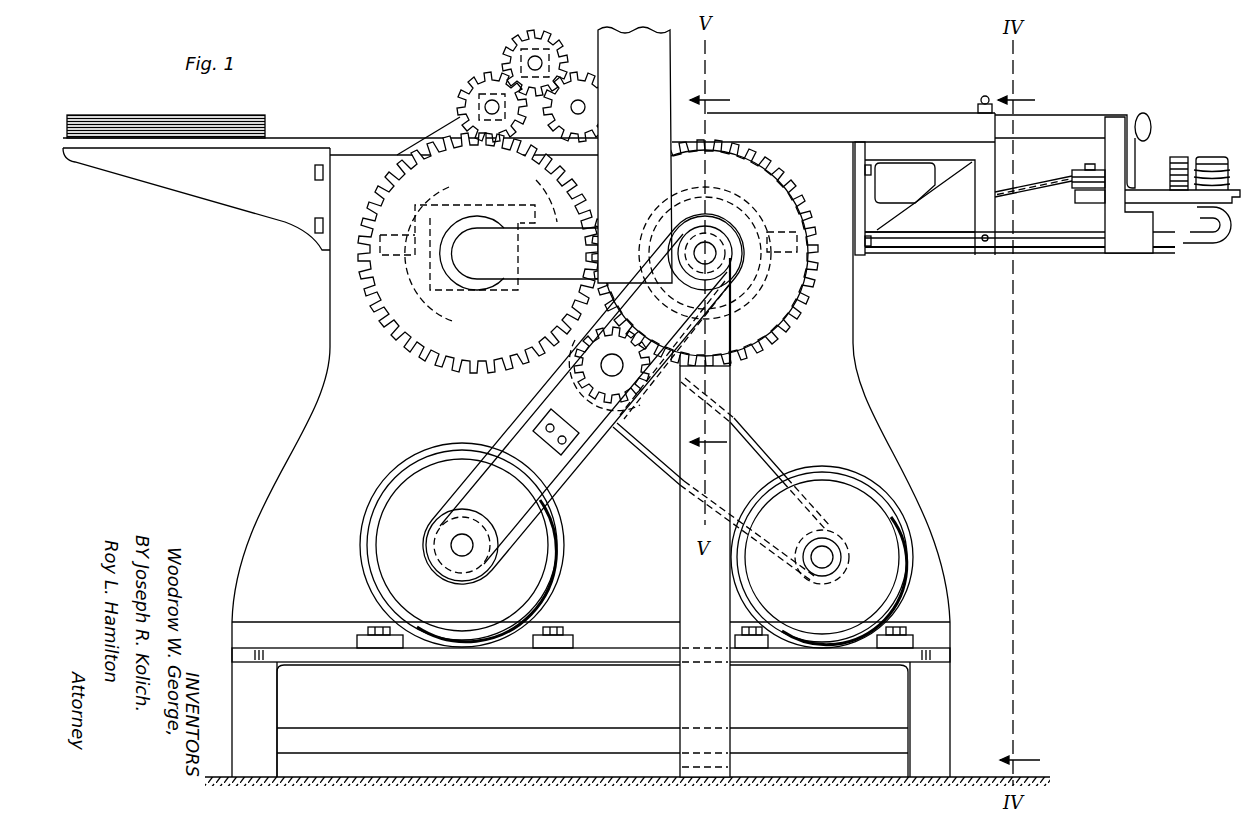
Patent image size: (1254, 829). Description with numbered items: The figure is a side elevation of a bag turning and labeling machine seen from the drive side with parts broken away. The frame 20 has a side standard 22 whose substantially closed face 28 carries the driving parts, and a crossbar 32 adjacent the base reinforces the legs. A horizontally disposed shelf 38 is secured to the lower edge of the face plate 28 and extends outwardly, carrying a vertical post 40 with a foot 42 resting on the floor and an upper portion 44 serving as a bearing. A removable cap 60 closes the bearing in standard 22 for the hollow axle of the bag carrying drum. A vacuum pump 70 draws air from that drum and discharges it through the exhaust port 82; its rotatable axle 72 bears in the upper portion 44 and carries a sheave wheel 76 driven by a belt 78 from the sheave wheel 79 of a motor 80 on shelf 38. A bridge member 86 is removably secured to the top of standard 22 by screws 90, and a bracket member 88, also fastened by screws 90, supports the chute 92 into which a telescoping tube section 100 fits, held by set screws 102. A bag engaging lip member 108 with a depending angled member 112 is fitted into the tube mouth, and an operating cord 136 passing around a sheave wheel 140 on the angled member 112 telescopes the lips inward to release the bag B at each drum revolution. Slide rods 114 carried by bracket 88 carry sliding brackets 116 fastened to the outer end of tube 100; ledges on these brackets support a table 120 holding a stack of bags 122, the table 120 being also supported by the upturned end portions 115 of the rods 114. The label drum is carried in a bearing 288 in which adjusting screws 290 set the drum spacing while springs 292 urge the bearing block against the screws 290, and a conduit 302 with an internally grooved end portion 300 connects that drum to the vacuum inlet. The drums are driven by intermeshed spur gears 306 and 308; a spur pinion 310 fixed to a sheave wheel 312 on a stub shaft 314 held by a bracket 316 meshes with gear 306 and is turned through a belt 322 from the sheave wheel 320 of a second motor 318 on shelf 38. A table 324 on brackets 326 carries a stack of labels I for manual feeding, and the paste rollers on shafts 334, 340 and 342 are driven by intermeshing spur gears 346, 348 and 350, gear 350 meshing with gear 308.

The stack of labels I is at (213, 115).
The table 324 is at (290, 140).
The bridge member 86 is at (364, 177).
The brackets 326 is at (287, 170).
The spur gear 348 is at (518, 31).
The shaft 340 is at (541, 58).
The spur gear 350 is at (467, 88).
The shaft 342 is at (485, 108).
The spur gear 346 is at (590, 79).
The shaft 334 is at (586, 107).
The exhaust port 82 is at (658, 71).
The springs 292 is at (436, 208).
The adjusting screws 290 is at (556, 206).
The conduit 302 is at (526, 253).
The bearing 288 is at (420, 266).
The internally grooved end portion 300 is at (468, 292).
The spur gear 308 is at (377, 318).
The vacuum pump 70 is at (738, 165).
The chute 92 is at (860, 113).
The removable cap 60 is at (737, 198).
The rotatable axle 72 is at (716, 257).
The sheave wheel 76 is at (684, 280).
The spur gear 306 is at (777, 349).
The screws 90 is at (863, 245).
The bracket member 88 is at (897, 213).
The slide rods 114 is at (930, 244).
The frame 20 is at (901, 459).
The set screws 102 is at (983, 99).
The telescoping tube section 100 is at (1058, 120).
The lip member 108 is at (1143, 113).
The bag B is at (1178, 155).
The stack of bags 122 is at (1198, 156).
The operating cord 136 is at (1028, 187).
The sheave wheel 140 is at (1077, 172).
The depending angled member 112 is at (1135, 165).
The table 120 is at (1090, 203).
The sliding brackets 116 is at (1115, 240).
The upturned end portions 115 is at (1215, 246).
The spur pinion 310 is at (562, 385).
The bracket 316 is at (536, 412).
The closed face 28 is at (464, 289).
The stub shaft 314 is at (628, 384).
The sheave wheel 312 is at (620, 427).
The belt 322 is at (746, 442).
The belt 78 is at (577, 465).
The side standard 22 is at (277, 490).
The motor 80 is at (462, 545).
The sheave wheel 79 is at (488, 528).
The sheave wheel 320 is at (825, 525).
The upper portion 44 is at (688, 580).
The motor 318 is at (822, 557).
The shelf 38 is at (604, 651).
The crossbar 32 is at (403, 736).
The post 40 is at (718, 703).
The foot 42 is at (735, 770).